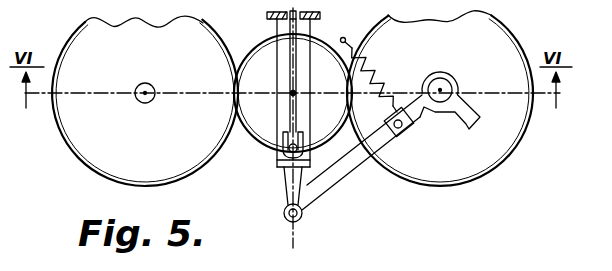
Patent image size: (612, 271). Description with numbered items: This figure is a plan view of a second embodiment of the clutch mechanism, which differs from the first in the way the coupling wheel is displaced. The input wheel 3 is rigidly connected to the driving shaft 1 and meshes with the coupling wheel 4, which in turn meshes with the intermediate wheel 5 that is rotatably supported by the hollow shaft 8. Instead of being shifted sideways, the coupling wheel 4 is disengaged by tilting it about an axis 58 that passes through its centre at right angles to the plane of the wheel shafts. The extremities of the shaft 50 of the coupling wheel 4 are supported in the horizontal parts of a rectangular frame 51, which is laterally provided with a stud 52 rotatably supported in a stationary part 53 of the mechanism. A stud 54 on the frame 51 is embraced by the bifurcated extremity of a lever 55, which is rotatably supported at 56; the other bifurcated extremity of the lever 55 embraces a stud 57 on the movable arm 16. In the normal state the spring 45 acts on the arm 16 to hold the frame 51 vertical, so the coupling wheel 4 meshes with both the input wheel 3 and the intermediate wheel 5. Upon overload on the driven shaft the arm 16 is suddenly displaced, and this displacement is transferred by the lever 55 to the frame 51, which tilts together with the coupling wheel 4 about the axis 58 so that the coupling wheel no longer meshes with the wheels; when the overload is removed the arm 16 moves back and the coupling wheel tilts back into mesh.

The driving shaft 1 is at (144, 91).
The input wheel 3 is at (62, 143).
The coupling wheel 4 is at (256, 44).
The intermediate wheel 5 is at (528, 135).
The hollow shaft 8 is at (441, 88).
The rotatable arm 16 is at (425, 109).
The spring 45 is at (375, 75).
The shaft of the coupling wheel 50 is at (292, 96).
The rectangular frame 51 is at (300, 108).
The stud 52 is at (297, 22).
The stationary part 53 is at (320, 15).
The stud 54 is at (290, 153).
The lever 55 is at (325, 185).
The lever pivot 56 is at (283, 212).
The stud 57 is at (406, 132).
The tilting axis 58 is at (293, 75).